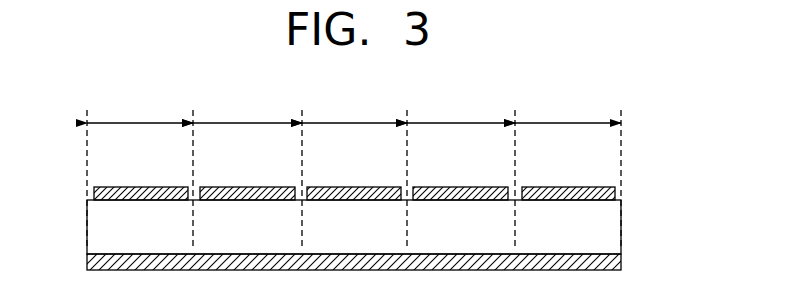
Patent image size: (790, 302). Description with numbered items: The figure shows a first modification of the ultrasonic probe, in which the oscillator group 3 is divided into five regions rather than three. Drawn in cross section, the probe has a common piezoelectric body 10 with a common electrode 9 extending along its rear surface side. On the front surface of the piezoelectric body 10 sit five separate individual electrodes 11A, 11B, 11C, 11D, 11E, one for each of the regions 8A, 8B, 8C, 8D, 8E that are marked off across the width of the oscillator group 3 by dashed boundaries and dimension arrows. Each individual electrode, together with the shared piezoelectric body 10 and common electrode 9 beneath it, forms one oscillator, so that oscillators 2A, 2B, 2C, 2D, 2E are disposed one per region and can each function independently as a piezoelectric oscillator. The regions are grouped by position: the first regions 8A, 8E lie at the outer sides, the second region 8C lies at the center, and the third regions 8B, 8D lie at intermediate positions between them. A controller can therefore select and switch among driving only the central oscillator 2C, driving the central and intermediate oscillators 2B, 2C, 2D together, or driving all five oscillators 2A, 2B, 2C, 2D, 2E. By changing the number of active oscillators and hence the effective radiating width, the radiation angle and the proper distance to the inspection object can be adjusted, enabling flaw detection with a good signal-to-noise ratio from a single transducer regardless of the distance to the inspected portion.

The oscillator group 3 is at (358, 215).
The piezoelectric body 10 is at (103, 231).
The common electrode 9 is at (621, 263).
The individual electrode 11A is at (132, 188).
The individual electrode 11B is at (239, 188).
The individual electrode 11C is at (345, 188).
The individual electrode 11D is at (451, 188).
The individual electrode 11E is at (561, 188).
The oscillator 2A is at (165, 222).
The oscillator 2B is at (270, 222).
The oscillator 2C is at (376, 222).
The oscillator 2D is at (486, 222).
The oscillator 2E is at (592, 222).
The first region 8A is at (140, 170).
The third region 8B is at (247, 170).
The second region 8C is at (354, 170).
The third region 8D is at (461, 170).
The first region 8E is at (568, 170).